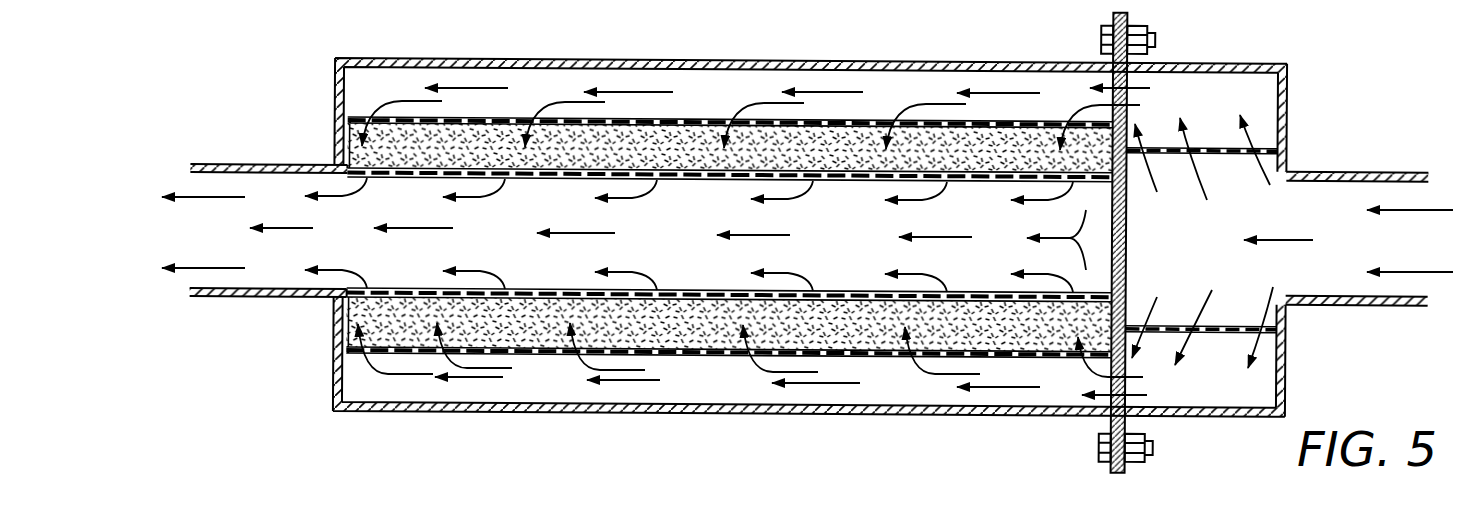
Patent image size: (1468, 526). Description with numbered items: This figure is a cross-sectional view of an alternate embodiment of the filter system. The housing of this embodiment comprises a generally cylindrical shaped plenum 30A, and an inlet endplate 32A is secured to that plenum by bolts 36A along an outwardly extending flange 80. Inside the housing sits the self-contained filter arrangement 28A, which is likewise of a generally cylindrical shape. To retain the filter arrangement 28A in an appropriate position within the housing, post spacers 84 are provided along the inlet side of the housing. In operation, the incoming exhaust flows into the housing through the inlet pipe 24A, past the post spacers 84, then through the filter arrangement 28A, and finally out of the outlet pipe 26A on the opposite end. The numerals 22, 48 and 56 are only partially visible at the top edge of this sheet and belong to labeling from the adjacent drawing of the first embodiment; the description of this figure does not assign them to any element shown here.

The plenum 30A is at (448, 58).
The inlet endplate 32A is at (1288, 100).
The filter arrangement 28A is at (691, 105).
The outlet pipe 26A is at (303, 299).
The inlet pipe 24A is at (1342, 173).
The outwardly extending flange 80 is at (1132, 58).
The bolts 36A is at (1150, 24).
The post spacers 84 is at (1283, 345).
The numeral from adjacent figure 22 is at (407, 6).
The numeral from adjacent figure 48 is at (854, 6).
The numeral from adjacent figure 56 is at (927, 6).